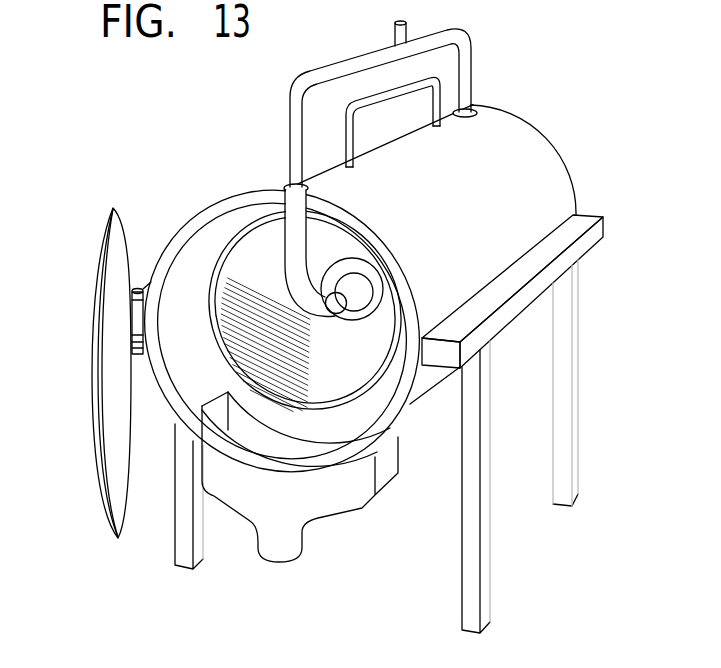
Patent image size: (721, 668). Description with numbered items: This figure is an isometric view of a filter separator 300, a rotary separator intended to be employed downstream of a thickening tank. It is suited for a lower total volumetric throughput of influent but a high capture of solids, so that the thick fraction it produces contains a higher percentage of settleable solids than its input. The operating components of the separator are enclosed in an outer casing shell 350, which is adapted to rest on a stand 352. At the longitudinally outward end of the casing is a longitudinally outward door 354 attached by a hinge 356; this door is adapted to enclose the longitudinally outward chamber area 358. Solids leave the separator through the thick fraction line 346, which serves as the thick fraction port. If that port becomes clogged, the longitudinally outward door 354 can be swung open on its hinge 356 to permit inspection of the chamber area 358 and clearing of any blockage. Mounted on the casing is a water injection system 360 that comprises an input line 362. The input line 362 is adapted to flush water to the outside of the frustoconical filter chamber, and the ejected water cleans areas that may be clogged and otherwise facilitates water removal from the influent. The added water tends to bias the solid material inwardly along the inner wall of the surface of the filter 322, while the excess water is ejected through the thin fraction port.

The filter separator 300 is at (172, 163).
The filter 322 is at (358, 382).
The thick fraction line 346 is at (302, 452).
The outer casing shell 350 is at (517, 150).
The stand 352 is at (477, 572).
The longitudinally outward door 354 is at (105, 239).
The hinge 356 is at (143, 291).
The longitudinally outward chamber area 358 is at (177, 362).
The water injection system 360 is at (388, 92).
The input line 362 is at (358, 102).